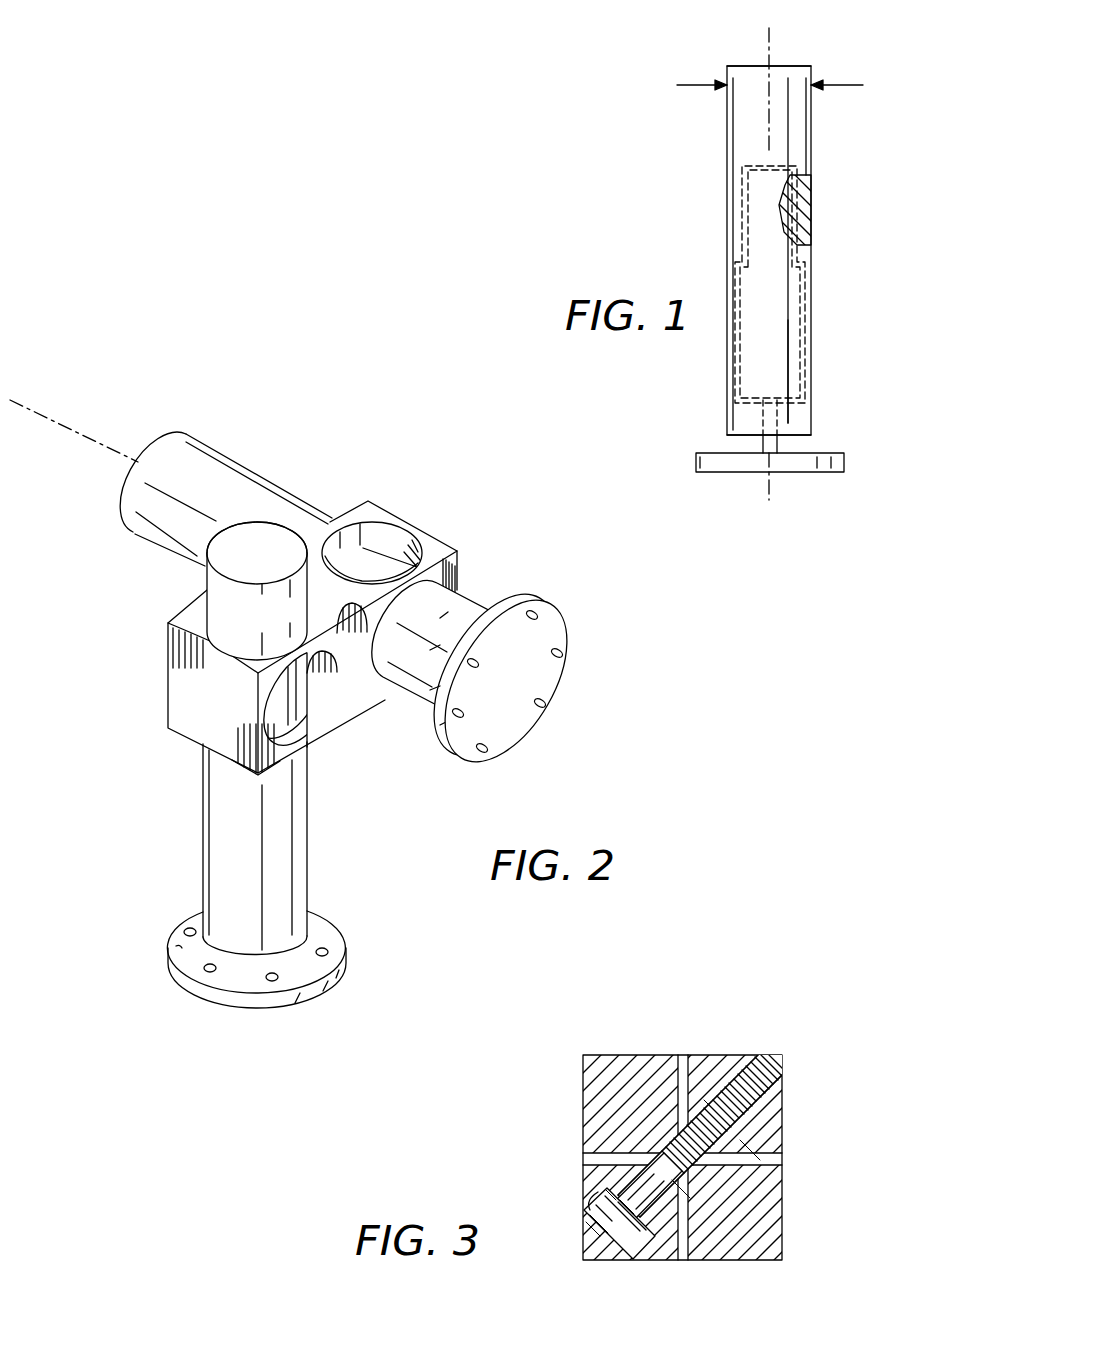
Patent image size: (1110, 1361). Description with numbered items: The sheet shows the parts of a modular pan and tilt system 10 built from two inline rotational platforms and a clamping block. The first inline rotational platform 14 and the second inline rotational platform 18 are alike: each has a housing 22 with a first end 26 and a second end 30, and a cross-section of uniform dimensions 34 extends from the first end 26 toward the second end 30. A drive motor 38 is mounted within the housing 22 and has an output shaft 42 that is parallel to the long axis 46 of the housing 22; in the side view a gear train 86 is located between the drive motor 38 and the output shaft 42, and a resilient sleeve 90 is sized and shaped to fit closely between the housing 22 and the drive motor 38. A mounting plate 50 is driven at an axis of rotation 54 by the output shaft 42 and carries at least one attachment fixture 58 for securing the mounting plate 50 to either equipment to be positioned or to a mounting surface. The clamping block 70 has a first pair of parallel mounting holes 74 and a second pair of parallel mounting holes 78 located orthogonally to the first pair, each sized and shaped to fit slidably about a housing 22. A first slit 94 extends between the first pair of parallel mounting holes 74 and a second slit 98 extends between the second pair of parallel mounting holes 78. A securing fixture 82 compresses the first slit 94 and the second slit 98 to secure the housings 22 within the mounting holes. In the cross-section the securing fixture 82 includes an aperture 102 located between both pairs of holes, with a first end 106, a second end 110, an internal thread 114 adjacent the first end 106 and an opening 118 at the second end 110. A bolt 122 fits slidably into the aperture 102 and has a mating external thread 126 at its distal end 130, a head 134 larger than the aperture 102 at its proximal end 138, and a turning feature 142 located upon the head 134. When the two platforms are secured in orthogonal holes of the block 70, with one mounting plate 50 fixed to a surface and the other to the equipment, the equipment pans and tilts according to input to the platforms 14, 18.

In FIG. 2, the modular pan and tilt system 10 is at (322, 673).
In FIG. 1, the first inline rotational platform 14 is at (780, 217).
In FIG. 2, the first inline rotational platform 14 is at (244, 652).
In FIG. 2, the second inline rotational platform 18 is at (323, 894).
In FIG. 1, the housing 22 is at (805, 217).
In FIG. 2, the housing 22 is at (244, 664).
In FIG. 1, the first end 26 is at (742, 66).
In FIG. 2, the first end 26 is at (153, 452).
In FIG. 1, the second end 30 is at (806, 443).
In FIG. 2, the second end 30 is at (473, 618).
In FIG. 1, the cross-section of uniform dimensions 34 is at (683, 85).
In FIG. 1, the drive motor 38 is at (790, 185).
In FIG. 1, the output shaft 42 is at (768, 445).
In FIG. 1, the long axis 46 is at (772, 40).
In FIG. 2, the long axis 46 is at (83, 437).
In FIG. 1, the mounting plate 50 is at (832, 462).
In FIG. 2, the mounting plate 50 is at (522, 697).
In FIG. 1, the axis of rotation 54 is at (772, 493).
In FIG. 2, the attachment fixture 58 is at (544, 706).
In FIG. 2, the clamping block 70 is at (300, 626).
In FIG. 3, the clamping block 70 is at (678, 1117).
In FIG. 2, the first pair of parallel mounting holes 74 is at (398, 546).
In FIG. 2, the second pair of parallel mounting holes 78 is at (448, 548).
In FIG. 3, the securing fixture 82 is at (708, 1141).
In FIG. 1, the gear train 86 is at (788, 328).
In FIG. 1, the resilient sleeve 90 is at (744, 213).
In FIG. 2, the first slit 94 is at (312, 597).
In FIG. 3, the first slit 94 is at (670, 1065).
In FIG. 2, the second slit 98 is at (363, 667).
In FIG. 3, the second slit 98 is at (783, 1163).
In FIG. 3, the aperture 102 is at (764, 1077).
In FIG. 3, the first end 106 is at (783, 1083).
In FIG. 3, the second end 110 is at (630, 1256).
In FIG. 3, the internal thread 114 is at (740, 1068).
In FIG. 3, the opening 118 is at (618, 1258).
In FIG. 3, the bolt 122 is at (672, 1180).
In FIG. 3, the mating external thread 126 is at (783, 1144).
In FIG. 3, the distal end 130 is at (710, 1068).
In FIG. 3, the head 134 is at (632, 1206).
In FIG. 3, the proximal end 138 is at (585, 1228).
In FIG. 3, the turning feature 142 is at (613, 1193).